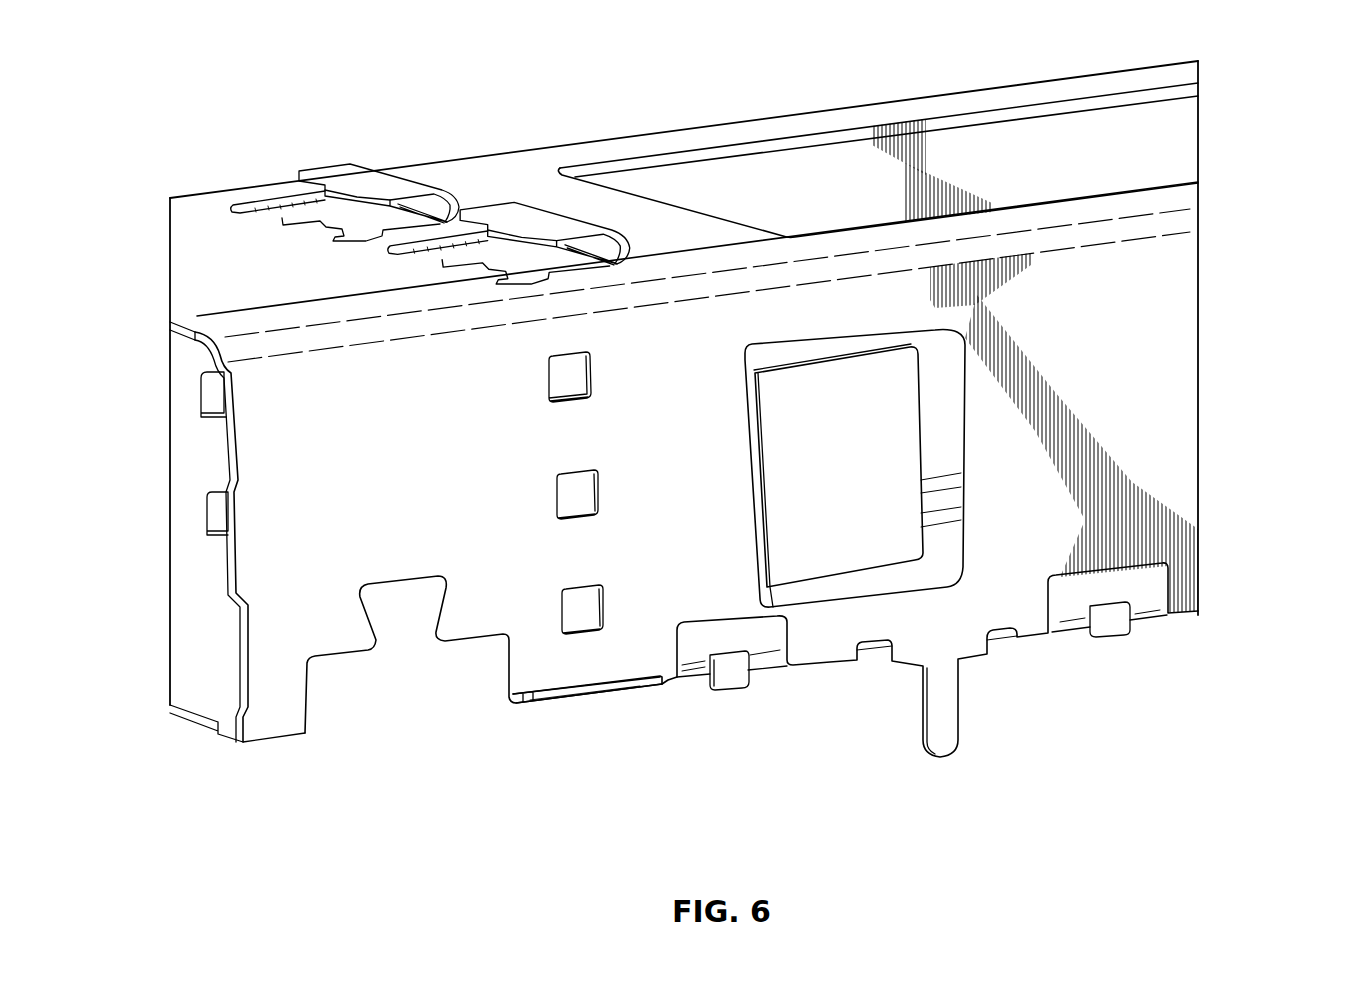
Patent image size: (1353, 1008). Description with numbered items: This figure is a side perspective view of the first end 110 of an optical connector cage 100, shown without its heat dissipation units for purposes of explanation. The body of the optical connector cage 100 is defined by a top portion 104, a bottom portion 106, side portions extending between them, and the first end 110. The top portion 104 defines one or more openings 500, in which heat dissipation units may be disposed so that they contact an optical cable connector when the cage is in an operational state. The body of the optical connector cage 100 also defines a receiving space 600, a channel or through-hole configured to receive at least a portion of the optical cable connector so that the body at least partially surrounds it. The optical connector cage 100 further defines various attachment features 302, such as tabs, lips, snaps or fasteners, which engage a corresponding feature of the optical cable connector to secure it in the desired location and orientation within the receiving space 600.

The optical connector cage 100 is at (1333, 73).
The top portion 104 is at (830, 116).
The bottom portion 106 is at (600, 704).
The first end 110 is at (213, 528).
The attachment features 302 is at (857, 514).
The openings 500 is at (1068, 106).
The receiving space 600 is at (780, 221).